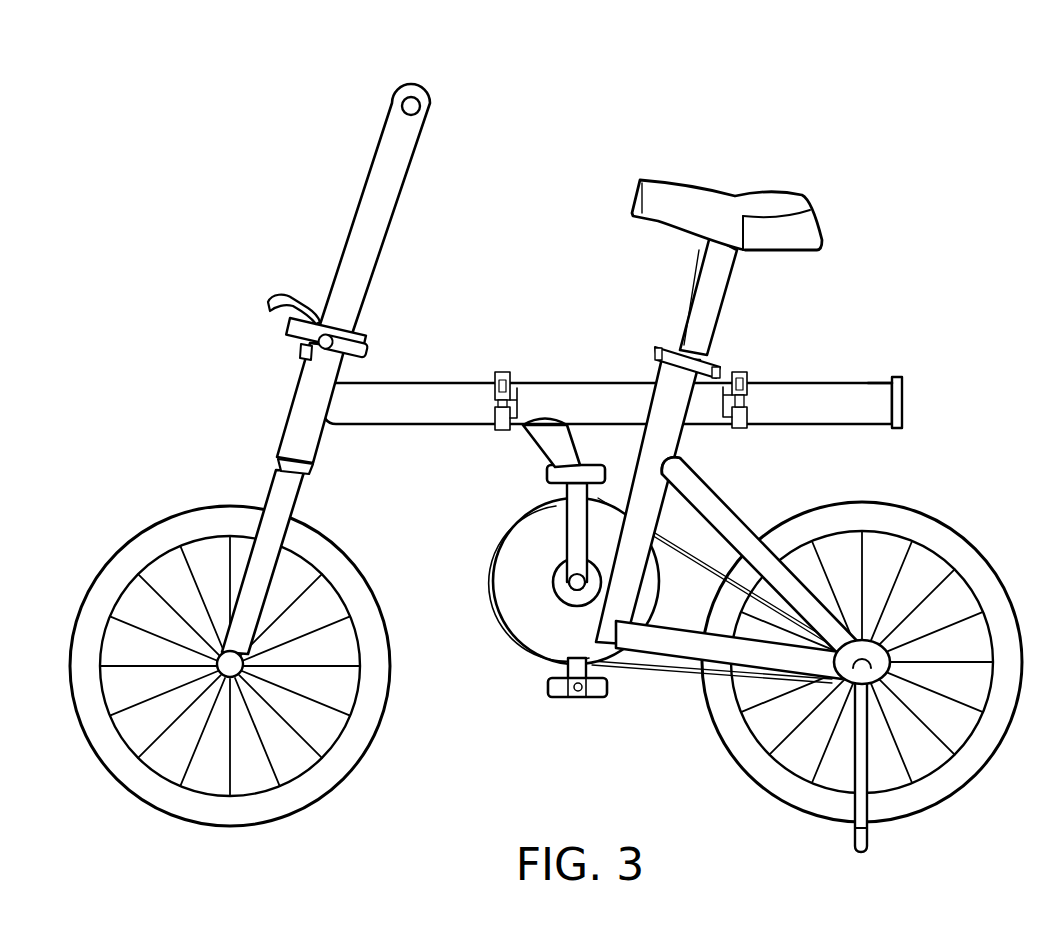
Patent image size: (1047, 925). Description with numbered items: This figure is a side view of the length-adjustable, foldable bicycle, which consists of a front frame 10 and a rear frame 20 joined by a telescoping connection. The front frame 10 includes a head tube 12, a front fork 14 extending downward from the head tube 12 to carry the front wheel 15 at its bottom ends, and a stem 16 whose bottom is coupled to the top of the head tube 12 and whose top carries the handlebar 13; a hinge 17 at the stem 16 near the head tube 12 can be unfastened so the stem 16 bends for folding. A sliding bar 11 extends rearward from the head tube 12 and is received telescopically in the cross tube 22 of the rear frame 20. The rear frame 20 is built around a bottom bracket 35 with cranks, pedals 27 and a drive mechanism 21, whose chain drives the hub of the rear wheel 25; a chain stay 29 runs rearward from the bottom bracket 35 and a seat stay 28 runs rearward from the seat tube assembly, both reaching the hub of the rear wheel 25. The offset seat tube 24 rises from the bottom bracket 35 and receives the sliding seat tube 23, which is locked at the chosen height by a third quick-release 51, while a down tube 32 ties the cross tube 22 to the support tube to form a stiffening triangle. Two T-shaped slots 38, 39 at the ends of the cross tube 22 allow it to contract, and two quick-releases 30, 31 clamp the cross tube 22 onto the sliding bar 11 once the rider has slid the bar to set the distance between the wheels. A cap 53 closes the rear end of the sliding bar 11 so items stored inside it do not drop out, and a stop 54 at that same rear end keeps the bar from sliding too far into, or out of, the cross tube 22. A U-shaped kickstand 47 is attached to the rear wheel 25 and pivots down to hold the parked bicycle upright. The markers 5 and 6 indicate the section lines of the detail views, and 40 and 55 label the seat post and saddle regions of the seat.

The section line 5- 5 is at (495, 370).
The section line 6- 6 is at (718, 208).
The front frame 10 is at (300, 201).
The sliding bar 11 is at (393, 385).
The head tube 12 is at (300, 398).
The handlebar 13 is at (405, 85).
The front fork 14 is at (282, 498).
The front wheel 15 is at (150, 535).
The stem 16 is at (400, 181).
The hinge 17 is at (290, 338).
The rear frame 20 is at (951, 472).
The drive mechanism 21 is at (528, 650).
The cross tube 22 is at (637, 386).
The sliding seat tube 23 is at (692, 312).
The offset seat tube 24 is at (668, 450).
The rear wheel 25 is at (972, 552).
The pedals 27 is at (548, 697).
The seat stay 28 is at (720, 512).
The chain stay 29 is at (654, 640).
The quick-release 30 is at (496, 386).
The quick-release 31 is at (746, 372).
The down tube 32 is at (547, 424).
The bottom bracket 35 is at (530, 600).
The T-shaped slot 38 is at (511, 390).
The T-shaped slot 39 is at (736, 414).
The seat post tube 40 is at (730, 270).
The kickstand 47 is at (852, 838).
The third quick-release 51 is at (706, 358).
The cap 53 is at (902, 404).
The stop 54 is at (886, 378).
The seat 55 is at (660, 178).